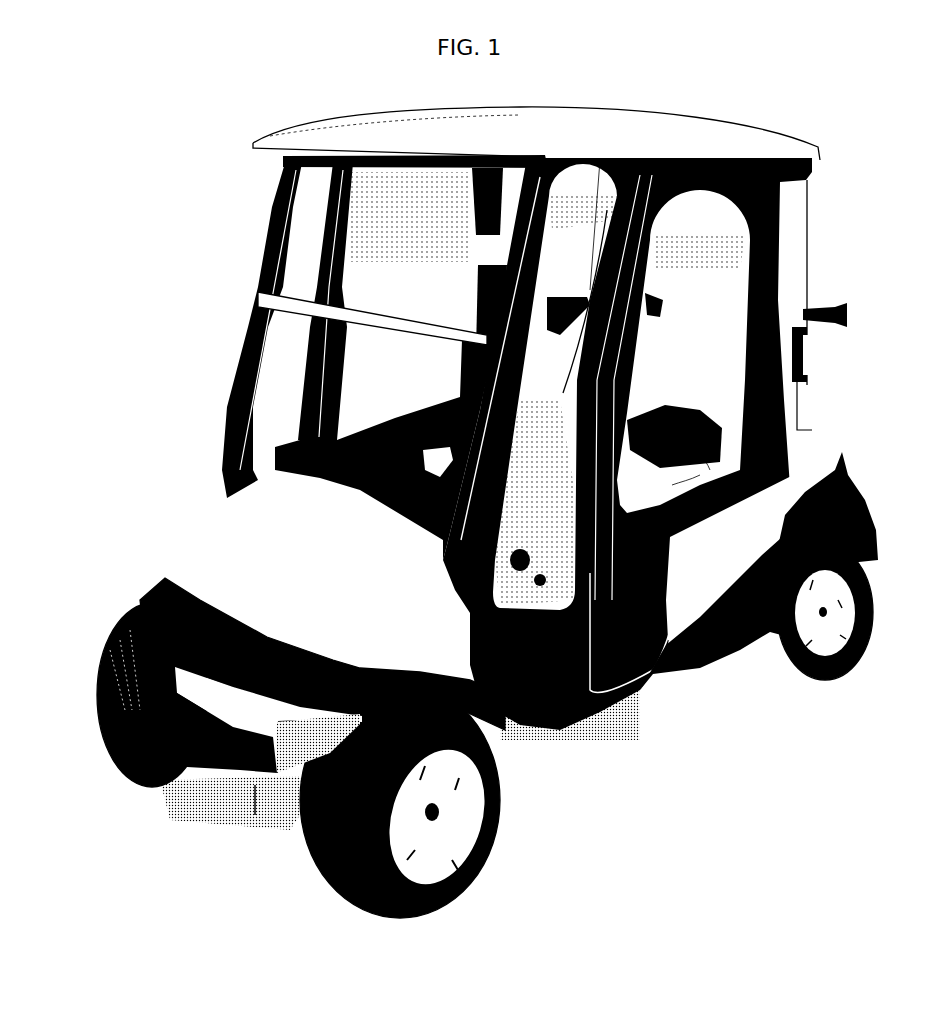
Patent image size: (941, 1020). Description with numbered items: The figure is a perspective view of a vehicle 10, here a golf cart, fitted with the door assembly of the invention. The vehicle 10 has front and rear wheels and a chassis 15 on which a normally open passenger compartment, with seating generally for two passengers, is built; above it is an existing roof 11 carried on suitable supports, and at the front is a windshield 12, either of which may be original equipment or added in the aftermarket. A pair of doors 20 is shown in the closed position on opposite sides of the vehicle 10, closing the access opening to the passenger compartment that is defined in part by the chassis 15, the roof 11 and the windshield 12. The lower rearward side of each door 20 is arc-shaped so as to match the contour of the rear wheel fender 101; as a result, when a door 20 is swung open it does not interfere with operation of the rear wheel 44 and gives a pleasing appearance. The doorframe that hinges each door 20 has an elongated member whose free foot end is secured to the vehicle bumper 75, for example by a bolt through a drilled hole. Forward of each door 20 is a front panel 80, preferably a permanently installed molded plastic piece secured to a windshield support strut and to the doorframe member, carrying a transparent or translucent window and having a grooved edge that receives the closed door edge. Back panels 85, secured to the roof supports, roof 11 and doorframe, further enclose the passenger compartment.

The vehicle 10 is at (146, 153).
The roof 11 is at (821, 165).
The windshield 12 is at (273, 355).
The chassis 15 is at (253, 808).
The door 20 is at (780, 307).
The rear wheel 44 is at (870, 604).
The vehicle bumper 75 is at (704, 672).
The front panel 80 is at (573, 747).
The back panel 85 is at (797, 262).
The rear wheel fender 101 is at (864, 504).